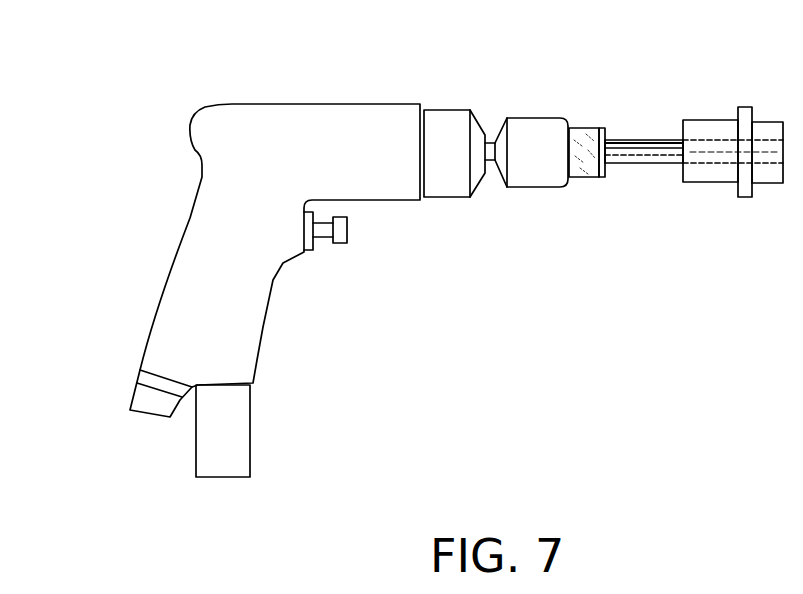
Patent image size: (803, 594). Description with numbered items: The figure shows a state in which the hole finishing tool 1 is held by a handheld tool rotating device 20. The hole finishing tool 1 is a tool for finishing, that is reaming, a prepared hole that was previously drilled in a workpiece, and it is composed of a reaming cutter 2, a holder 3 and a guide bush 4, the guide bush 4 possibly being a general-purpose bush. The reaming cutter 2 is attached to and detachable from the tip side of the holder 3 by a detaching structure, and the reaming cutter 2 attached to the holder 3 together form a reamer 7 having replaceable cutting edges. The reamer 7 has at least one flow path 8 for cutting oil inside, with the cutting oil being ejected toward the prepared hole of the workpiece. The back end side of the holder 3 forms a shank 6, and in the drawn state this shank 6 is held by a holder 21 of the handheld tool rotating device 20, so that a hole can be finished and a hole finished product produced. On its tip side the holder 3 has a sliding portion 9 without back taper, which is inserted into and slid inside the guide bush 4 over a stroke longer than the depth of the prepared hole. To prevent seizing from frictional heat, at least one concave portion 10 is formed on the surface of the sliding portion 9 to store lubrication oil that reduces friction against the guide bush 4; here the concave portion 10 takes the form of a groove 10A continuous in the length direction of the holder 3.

The hole finishing tool 1 is at (681, 173).
The reaming cutter 2 is at (772, 137).
The holder 3 is at (613, 178).
The guide bush 4 is at (712, 182).
The shank 6 is at (584, 127).
The reamer 7 is at (657, 164).
The flow path 8 is at (635, 170).
The sliding portion 9 is at (674, 167).
The concave portion 10 is at (623, 140).
The groove 10A is at (647, 140).
The handheld tool rotating device 20 is at (203, 168).
The holder 21 is at (540, 175).